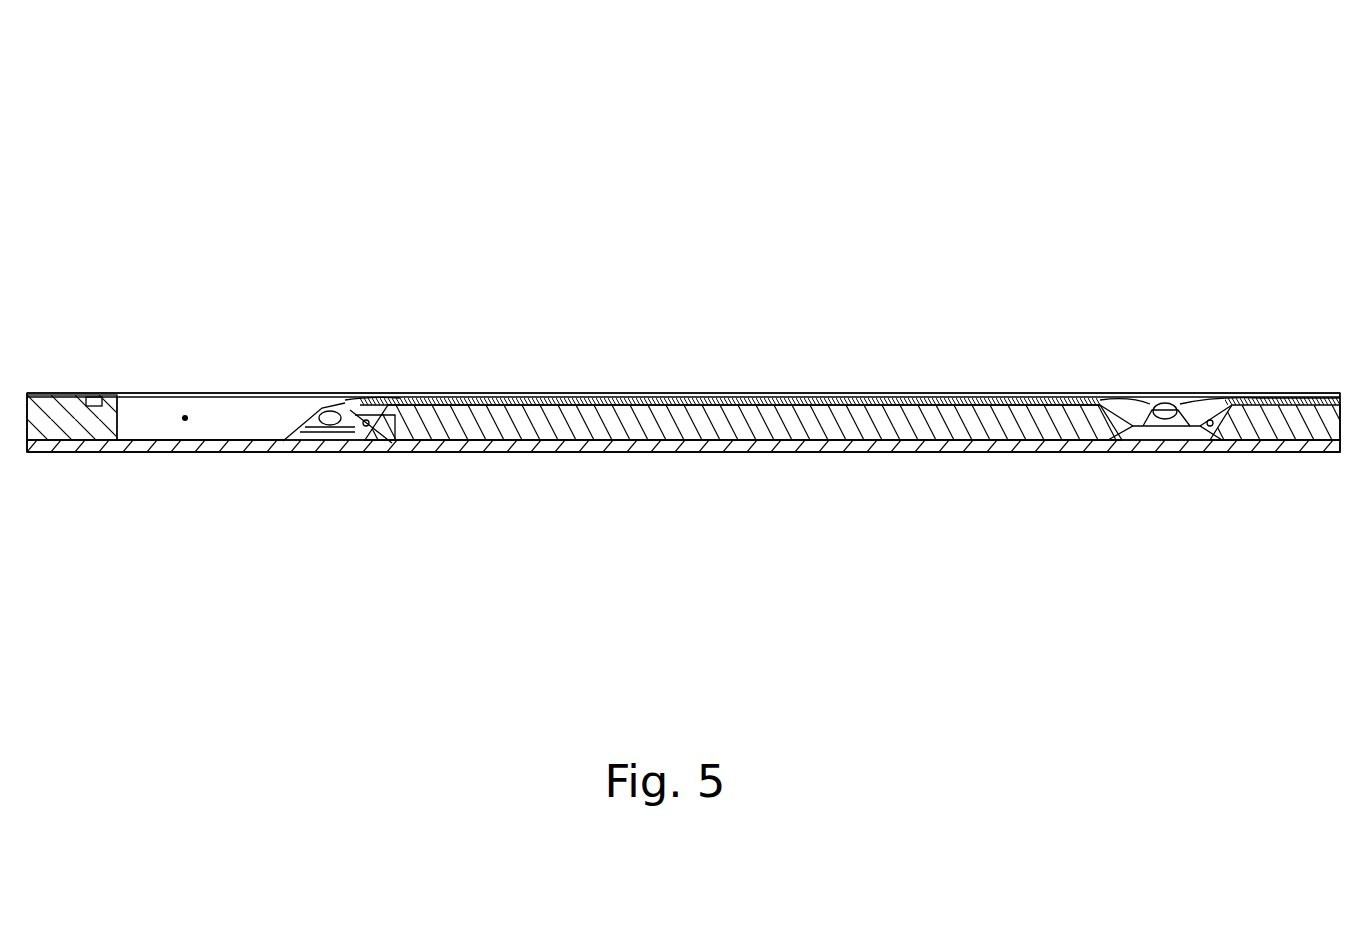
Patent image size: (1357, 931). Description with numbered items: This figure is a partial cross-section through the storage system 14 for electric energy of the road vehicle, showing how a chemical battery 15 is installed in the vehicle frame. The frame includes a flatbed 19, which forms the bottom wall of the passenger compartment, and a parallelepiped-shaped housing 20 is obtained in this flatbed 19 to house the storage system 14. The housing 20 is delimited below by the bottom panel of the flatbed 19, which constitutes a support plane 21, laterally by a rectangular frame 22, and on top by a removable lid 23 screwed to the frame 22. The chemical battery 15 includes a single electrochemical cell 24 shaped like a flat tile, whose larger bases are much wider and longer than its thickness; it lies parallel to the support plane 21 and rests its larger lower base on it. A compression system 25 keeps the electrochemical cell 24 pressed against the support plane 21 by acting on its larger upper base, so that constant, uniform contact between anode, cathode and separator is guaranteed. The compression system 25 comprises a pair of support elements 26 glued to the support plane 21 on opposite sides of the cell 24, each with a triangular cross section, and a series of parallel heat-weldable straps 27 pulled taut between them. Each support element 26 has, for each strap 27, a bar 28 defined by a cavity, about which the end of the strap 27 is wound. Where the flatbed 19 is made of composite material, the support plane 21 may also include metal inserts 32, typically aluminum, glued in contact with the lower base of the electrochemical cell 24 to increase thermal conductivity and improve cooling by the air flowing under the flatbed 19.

The storage system 14 is at (723, 565).
The chemical battery 15 is at (813, 300).
The flatbed 19 is at (650, 138).
The housing 20 is at (185, 421).
The support plane 21 is at (355, 452).
The rectangular frame 22 is at (78, 420).
The lid 23 is at (293, 393).
The electrochemical cell 24 is at (488, 441).
The compression system 25 is at (402, 308).
The support element 26 is at (290, 430).
The strap 27 is at (1138, 400).
The bar 28 is at (332, 396).
The metal insert 32 is at (850, 443).